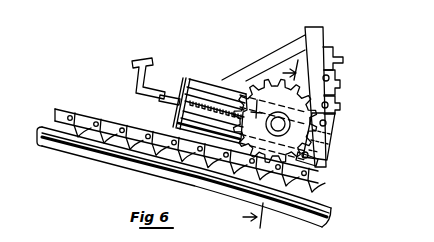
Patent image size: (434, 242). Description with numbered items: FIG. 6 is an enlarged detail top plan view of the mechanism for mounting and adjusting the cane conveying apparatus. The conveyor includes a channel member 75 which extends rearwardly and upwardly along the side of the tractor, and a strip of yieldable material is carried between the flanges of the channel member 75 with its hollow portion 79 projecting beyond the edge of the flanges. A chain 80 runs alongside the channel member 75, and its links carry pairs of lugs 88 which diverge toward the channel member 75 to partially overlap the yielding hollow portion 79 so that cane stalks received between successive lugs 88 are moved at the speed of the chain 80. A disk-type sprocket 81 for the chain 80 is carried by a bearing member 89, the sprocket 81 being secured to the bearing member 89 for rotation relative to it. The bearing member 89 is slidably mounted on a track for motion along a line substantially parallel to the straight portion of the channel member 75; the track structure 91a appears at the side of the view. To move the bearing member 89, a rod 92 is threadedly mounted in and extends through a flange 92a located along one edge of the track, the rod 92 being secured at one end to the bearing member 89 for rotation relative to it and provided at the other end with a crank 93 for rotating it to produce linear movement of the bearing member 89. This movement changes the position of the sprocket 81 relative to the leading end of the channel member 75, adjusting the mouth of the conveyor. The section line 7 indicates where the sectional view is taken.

The channel member 75 is at (131, 158).
The hollow portion 79 is at (60, 136).
The rod 92 is at (197, 84).
The flange 92a is at (191, 57).
The crank 93 is at (135, 81).
The support arm 91a is at (324, 32).
The sprocket 81 is at (336, 126).
The lugs 88 is at (344, 60).
The chain 80 is at (348, 86).
The bearing member 89 is at (329, 150).
The section line 7- 7 is at (275, 145).